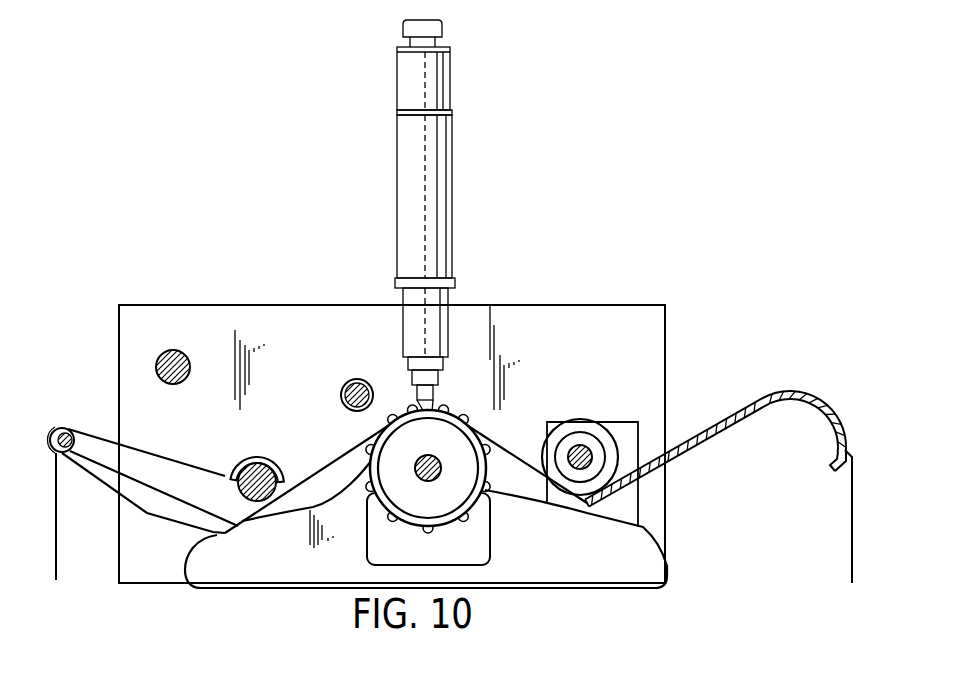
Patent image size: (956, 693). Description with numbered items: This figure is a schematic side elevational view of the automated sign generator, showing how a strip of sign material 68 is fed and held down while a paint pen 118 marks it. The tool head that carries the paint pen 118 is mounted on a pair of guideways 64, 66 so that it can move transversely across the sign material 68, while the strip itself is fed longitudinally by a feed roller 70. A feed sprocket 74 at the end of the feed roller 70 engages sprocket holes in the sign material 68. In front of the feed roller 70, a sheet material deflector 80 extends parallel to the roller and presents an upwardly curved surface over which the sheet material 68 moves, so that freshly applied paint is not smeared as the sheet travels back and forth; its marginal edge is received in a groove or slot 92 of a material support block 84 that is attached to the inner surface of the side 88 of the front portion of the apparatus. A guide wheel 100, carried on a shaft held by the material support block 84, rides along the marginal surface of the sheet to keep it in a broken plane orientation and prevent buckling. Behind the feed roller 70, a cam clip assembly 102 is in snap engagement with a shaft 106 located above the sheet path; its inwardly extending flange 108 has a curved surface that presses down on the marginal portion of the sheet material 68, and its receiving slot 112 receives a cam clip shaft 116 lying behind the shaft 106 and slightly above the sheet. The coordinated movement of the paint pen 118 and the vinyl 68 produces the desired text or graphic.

The paint pen 118 is at (438, 132).
The side 88 is at (553, 320).
The guideway 64 is at (187, 373).
The guideway 66 is at (355, 380).
The receiving slot 112 is at (67, 426).
The cam clip shaft 116 is at (62, 453).
The cam clip assembly 102 is at (163, 452).
The inwardly extending flange 108 is at (220, 477).
The shaft 106 is at (268, 477).
The feed roller 70 is at (444, 485).
The feed sprocket 74 is at (478, 492).
The guide wheel 100 is at (578, 417).
The material support block 84 is at (622, 430).
The sheet material deflector 80 is at (725, 425).
The groove or slot 92 is at (587, 505).
The strip of sign material 68 is at (852, 520).